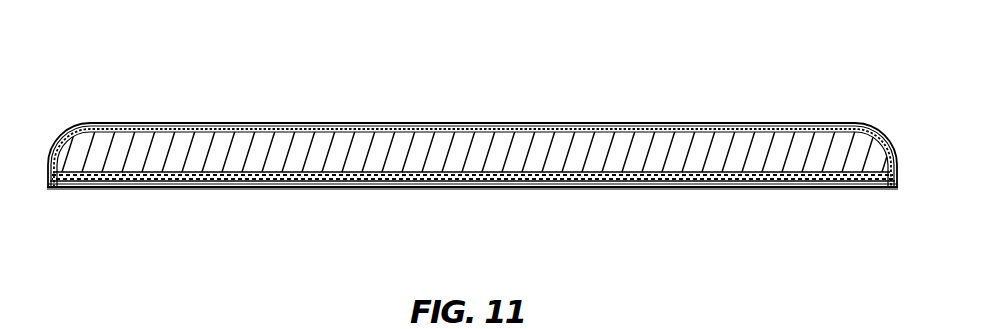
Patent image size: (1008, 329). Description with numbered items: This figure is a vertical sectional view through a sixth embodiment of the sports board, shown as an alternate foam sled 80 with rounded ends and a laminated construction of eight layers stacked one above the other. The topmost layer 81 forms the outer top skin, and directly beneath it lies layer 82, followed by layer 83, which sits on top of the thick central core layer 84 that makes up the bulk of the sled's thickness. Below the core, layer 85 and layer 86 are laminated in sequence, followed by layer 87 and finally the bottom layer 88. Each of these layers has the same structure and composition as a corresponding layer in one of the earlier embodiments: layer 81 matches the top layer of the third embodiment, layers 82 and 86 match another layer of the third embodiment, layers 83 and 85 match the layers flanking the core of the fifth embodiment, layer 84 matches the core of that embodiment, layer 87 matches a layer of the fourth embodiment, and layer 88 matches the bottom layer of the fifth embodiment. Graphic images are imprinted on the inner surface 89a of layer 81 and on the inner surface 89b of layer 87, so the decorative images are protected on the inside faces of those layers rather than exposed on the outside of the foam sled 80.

The foam sled 80 is at (156, 78).
The layer 81 is at (750, 122).
The layer 82 is at (788, 125).
The layer 83 is at (838, 125).
The layer 84 is at (725, 157).
The layer 85 is at (637, 180).
The layer 86 is at (553, 182).
The layer 87 is at (400, 188).
The layer 88 is at (327, 188).
The inner surface 89a is at (642, 128).
The inner surface 89b is at (249, 183).